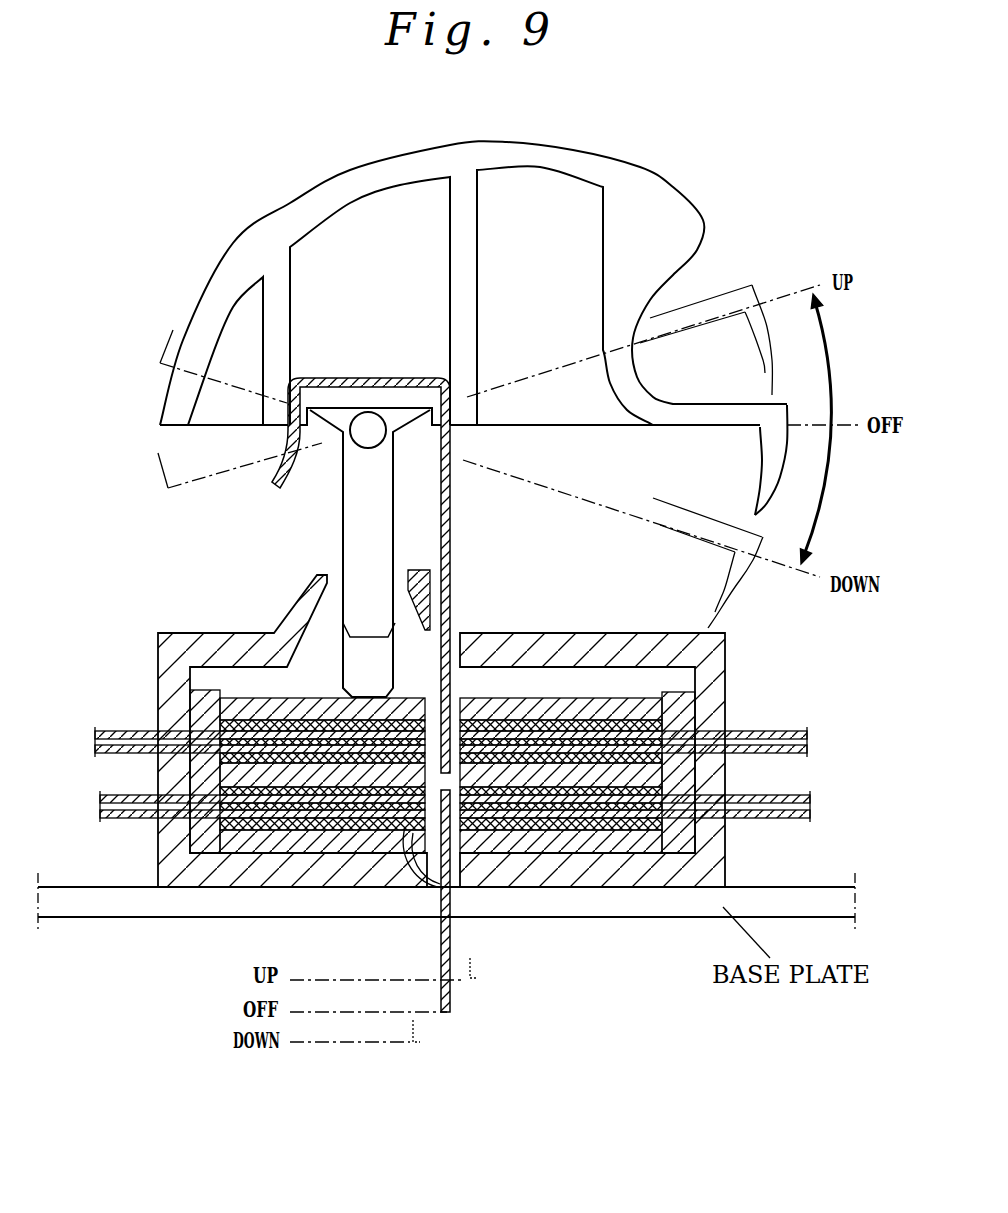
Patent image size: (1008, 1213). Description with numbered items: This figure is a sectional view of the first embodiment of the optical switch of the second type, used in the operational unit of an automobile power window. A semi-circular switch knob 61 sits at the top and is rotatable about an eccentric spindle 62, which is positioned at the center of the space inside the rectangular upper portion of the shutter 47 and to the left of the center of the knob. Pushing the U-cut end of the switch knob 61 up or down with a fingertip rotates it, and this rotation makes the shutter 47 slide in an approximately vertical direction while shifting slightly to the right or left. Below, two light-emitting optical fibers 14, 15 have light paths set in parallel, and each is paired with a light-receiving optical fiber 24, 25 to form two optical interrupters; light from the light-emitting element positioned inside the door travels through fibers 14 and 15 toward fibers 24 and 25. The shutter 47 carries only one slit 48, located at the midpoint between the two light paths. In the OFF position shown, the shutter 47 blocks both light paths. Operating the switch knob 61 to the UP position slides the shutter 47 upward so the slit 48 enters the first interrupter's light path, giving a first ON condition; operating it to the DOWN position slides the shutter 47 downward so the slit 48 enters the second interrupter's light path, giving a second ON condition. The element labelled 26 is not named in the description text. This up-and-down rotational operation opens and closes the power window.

The switch knob 61 is at (618, 152).
The eccentric spindle 62 is at (378, 410).
The shutter 47 is at (452, 568).
The slit 48 is at (441, 777).
The movable contact 26 is at (503, 668).
The light-receiving optical fiber 24 is at (121, 731).
The light-receiving optical fiber 25 is at (127, 818).
The light-emitting optical fiber 14 is at (757, 731).
The light-emitting optical fiber 15 is at (756, 818).